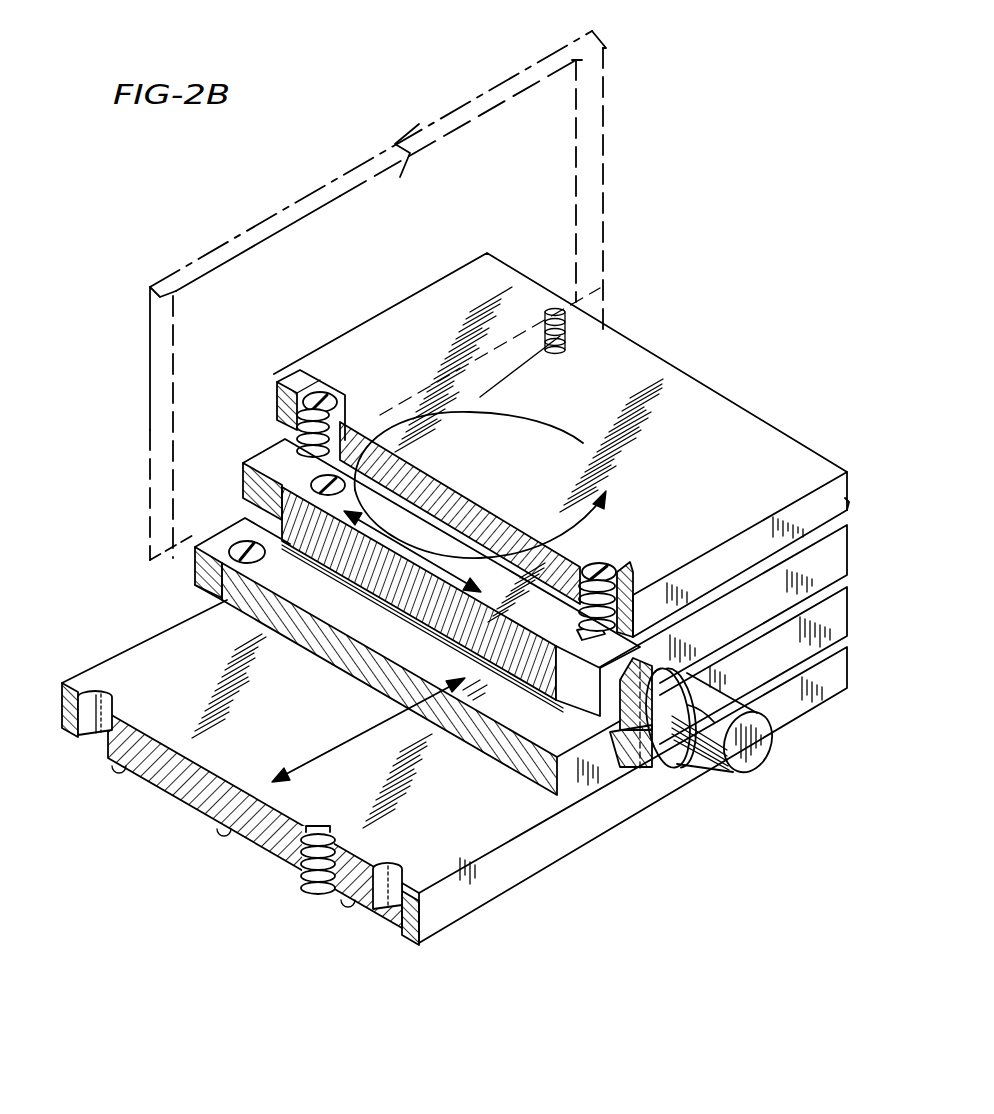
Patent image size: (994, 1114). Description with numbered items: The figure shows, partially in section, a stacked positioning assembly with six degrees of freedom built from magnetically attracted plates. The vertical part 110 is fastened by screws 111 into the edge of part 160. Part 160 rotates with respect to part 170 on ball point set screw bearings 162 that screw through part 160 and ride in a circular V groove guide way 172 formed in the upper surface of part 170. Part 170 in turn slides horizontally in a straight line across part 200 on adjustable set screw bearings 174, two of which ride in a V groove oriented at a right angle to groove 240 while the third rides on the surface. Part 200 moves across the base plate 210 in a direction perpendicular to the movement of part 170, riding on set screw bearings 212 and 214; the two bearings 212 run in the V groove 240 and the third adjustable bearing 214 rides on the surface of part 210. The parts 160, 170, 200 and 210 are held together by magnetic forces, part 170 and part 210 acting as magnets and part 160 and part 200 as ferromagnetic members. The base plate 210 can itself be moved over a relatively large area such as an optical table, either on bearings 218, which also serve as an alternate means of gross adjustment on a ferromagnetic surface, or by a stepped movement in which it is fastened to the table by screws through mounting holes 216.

The vertical part 110 is at (192, 258).
The screws 111 is at (555, 306).
The part 160 is at (677, 537).
The ball point set screw bearings 162 is at (279, 380).
The part 170 is at (385, 520).
The circular V groove guide way 172 is at (247, 457).
The adjustable set screw bearings 174 is at (227, 577).
The part 200 is at (540, 735).
The base plate 210 is at (193, 703).
The set screw bearings 212 is at (306, 887).
The set screw bearing 214 is at (160, 723).
The mounting holes 216 is at (94, 680).
The bearings 218 is at (114, 768).
The V groove 240 is at (458, 743).